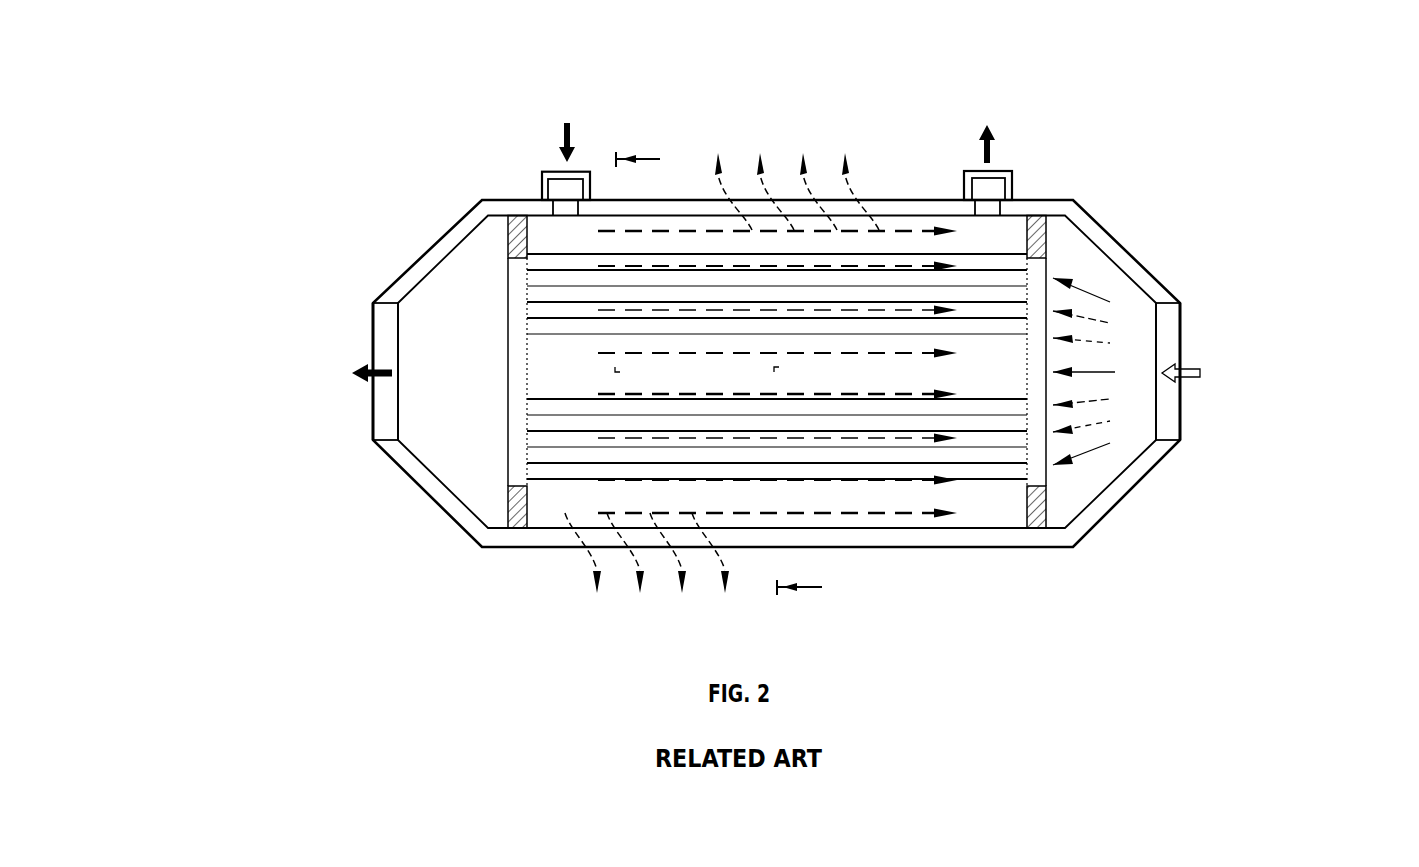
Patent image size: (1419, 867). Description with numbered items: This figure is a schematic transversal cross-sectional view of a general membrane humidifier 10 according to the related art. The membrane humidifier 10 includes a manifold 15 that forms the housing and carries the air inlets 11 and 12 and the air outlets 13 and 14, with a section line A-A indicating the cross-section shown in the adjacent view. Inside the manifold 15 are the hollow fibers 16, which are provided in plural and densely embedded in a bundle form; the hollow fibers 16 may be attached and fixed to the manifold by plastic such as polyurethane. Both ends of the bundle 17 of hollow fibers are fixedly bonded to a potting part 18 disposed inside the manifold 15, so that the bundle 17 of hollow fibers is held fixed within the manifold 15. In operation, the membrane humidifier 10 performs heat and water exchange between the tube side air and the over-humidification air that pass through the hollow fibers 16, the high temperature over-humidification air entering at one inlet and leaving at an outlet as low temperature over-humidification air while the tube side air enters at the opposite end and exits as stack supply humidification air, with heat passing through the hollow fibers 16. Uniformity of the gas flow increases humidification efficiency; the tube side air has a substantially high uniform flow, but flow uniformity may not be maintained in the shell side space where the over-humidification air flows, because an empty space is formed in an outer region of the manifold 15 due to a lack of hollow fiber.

The membrane humidifier 10 is at (741, 316).
The air inlet 11 is at (552, 182).
The air inlet 12 is at (1170, 323).
The air outlet 13 is at (1002, 188).
The air outlet 14 is at (383, 405).
The manifold 15 is at (910, 208).
The hollow fiber 16 is at (968, 493).
The bundle of hollow fibers 17 is at (996, 496).
The potting part 18 is at (517, 457).